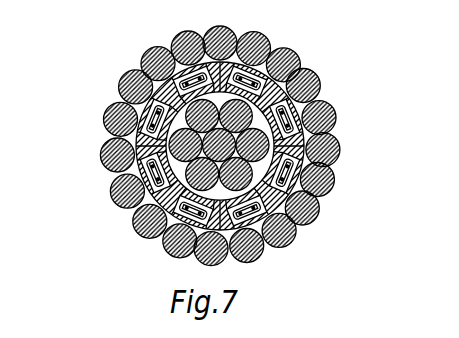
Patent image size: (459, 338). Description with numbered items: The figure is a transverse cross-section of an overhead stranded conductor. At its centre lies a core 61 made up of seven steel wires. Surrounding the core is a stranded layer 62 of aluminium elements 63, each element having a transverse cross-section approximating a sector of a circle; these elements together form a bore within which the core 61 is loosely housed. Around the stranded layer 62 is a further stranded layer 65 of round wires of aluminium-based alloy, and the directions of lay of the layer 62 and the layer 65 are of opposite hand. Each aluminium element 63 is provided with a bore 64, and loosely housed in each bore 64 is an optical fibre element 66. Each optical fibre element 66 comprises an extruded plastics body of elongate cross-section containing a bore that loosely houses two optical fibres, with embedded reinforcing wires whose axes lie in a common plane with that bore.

The core 61 is at (272, 100).
The stranded layer 62 is at (293, 178).
The aluminium element 63 is at (278, 141).
The bore 64 is at (150, 47).
The stranded layer of round wires 65 is at (283, 42).
The optical fibre element 66 is at (100, 157).